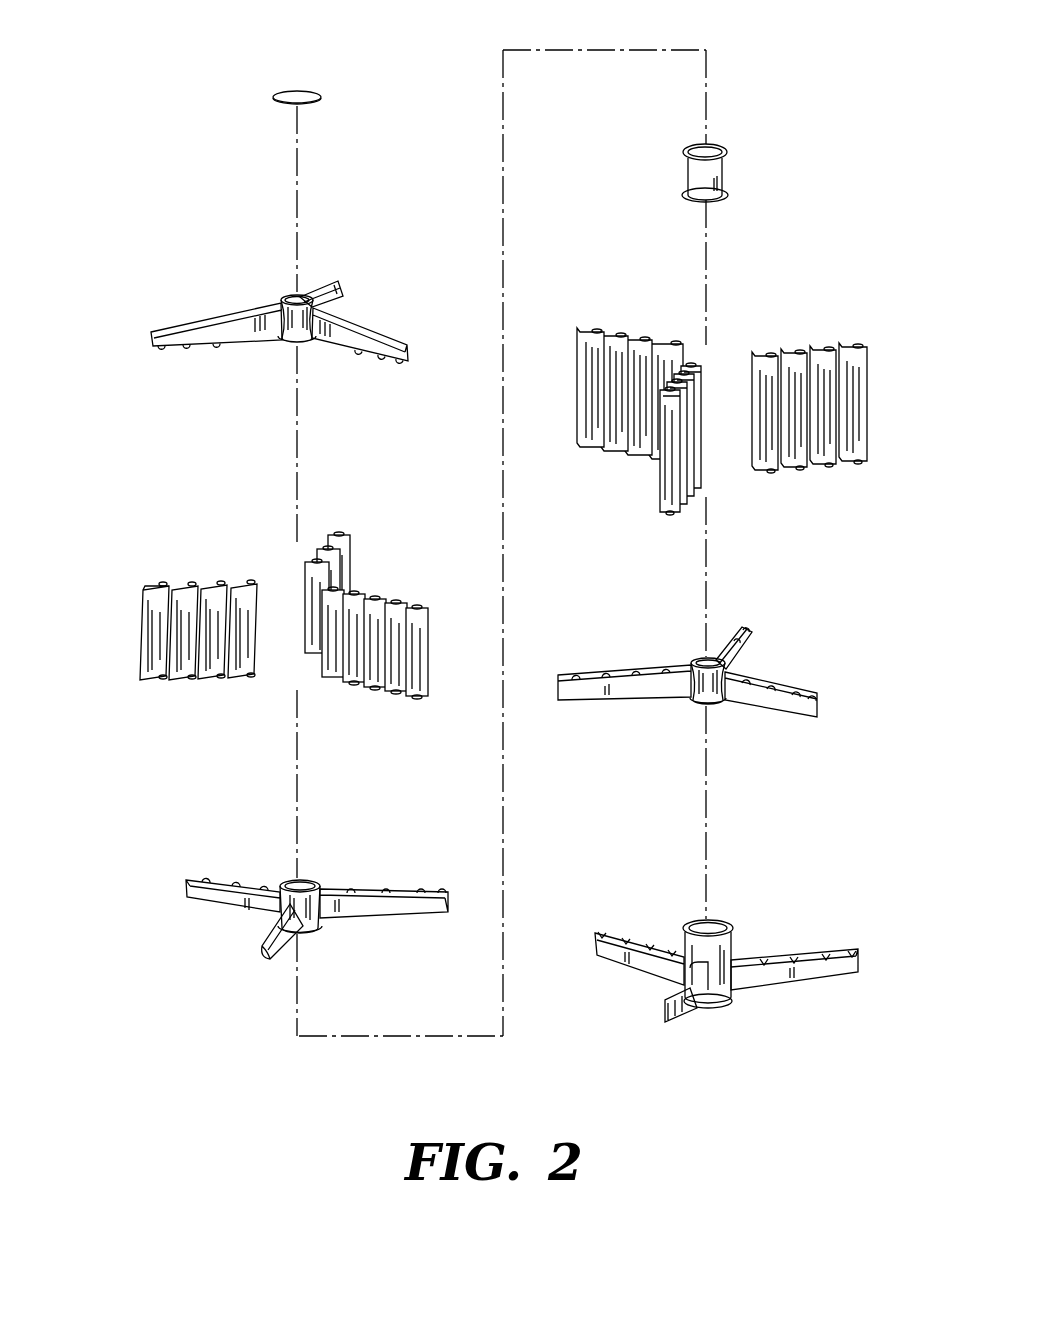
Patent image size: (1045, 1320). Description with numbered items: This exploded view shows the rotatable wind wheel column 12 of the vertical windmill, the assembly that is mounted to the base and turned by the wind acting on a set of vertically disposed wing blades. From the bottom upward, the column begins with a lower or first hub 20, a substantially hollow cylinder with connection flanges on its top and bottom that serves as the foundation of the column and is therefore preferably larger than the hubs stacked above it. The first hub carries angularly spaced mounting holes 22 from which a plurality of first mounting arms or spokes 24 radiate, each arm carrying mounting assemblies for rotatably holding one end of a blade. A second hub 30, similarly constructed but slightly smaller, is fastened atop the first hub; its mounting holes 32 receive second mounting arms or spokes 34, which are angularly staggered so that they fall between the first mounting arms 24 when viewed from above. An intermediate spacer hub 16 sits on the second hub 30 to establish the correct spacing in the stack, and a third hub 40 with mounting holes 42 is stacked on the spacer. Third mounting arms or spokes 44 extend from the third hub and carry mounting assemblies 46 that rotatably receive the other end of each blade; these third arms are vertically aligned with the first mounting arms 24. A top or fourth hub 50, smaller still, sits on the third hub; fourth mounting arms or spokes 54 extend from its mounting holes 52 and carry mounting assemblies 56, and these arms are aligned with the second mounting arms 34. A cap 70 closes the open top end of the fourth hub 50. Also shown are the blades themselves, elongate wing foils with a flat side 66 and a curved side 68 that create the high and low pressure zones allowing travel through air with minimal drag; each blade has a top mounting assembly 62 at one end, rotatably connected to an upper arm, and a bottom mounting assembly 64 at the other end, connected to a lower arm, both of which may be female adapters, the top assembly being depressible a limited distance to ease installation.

The wind wheel column 12 is at (813, 68).
The intermediate spacer hub 16 is at (725, 176).
The first hub 20 is at (730, 945).
The spider arm 22 is at (707, 967).
The first mounting arms 24 is at (823, 975).
The second hub 30 is at (702, 706).
The mounting holes 32 is at (713, 707).
The second mounting arms 34 is at (803, 688).
The third hub 40 is at (279, 910).
The mounting holes 42 is at (318, 888).
The third mounting arms 44 is at (258, 904).
The mounting assemblies 46 is at (207, 897).
The fourth hub 50 is at (283, 340).
The mounting holes 52 is at (303, 345).
The fourth mounting arms 54 is at (383, 323).
The mounting assemblies 56 is at (180, 346).
The top mounting assembly 62 is at (156, 639).
The bottom mounting assembly 64 is at (243, 679).
The flat side 66 is at (420, 623).
The curved side 68 is at (147, 633).
The cap 70 is at (283, 92).